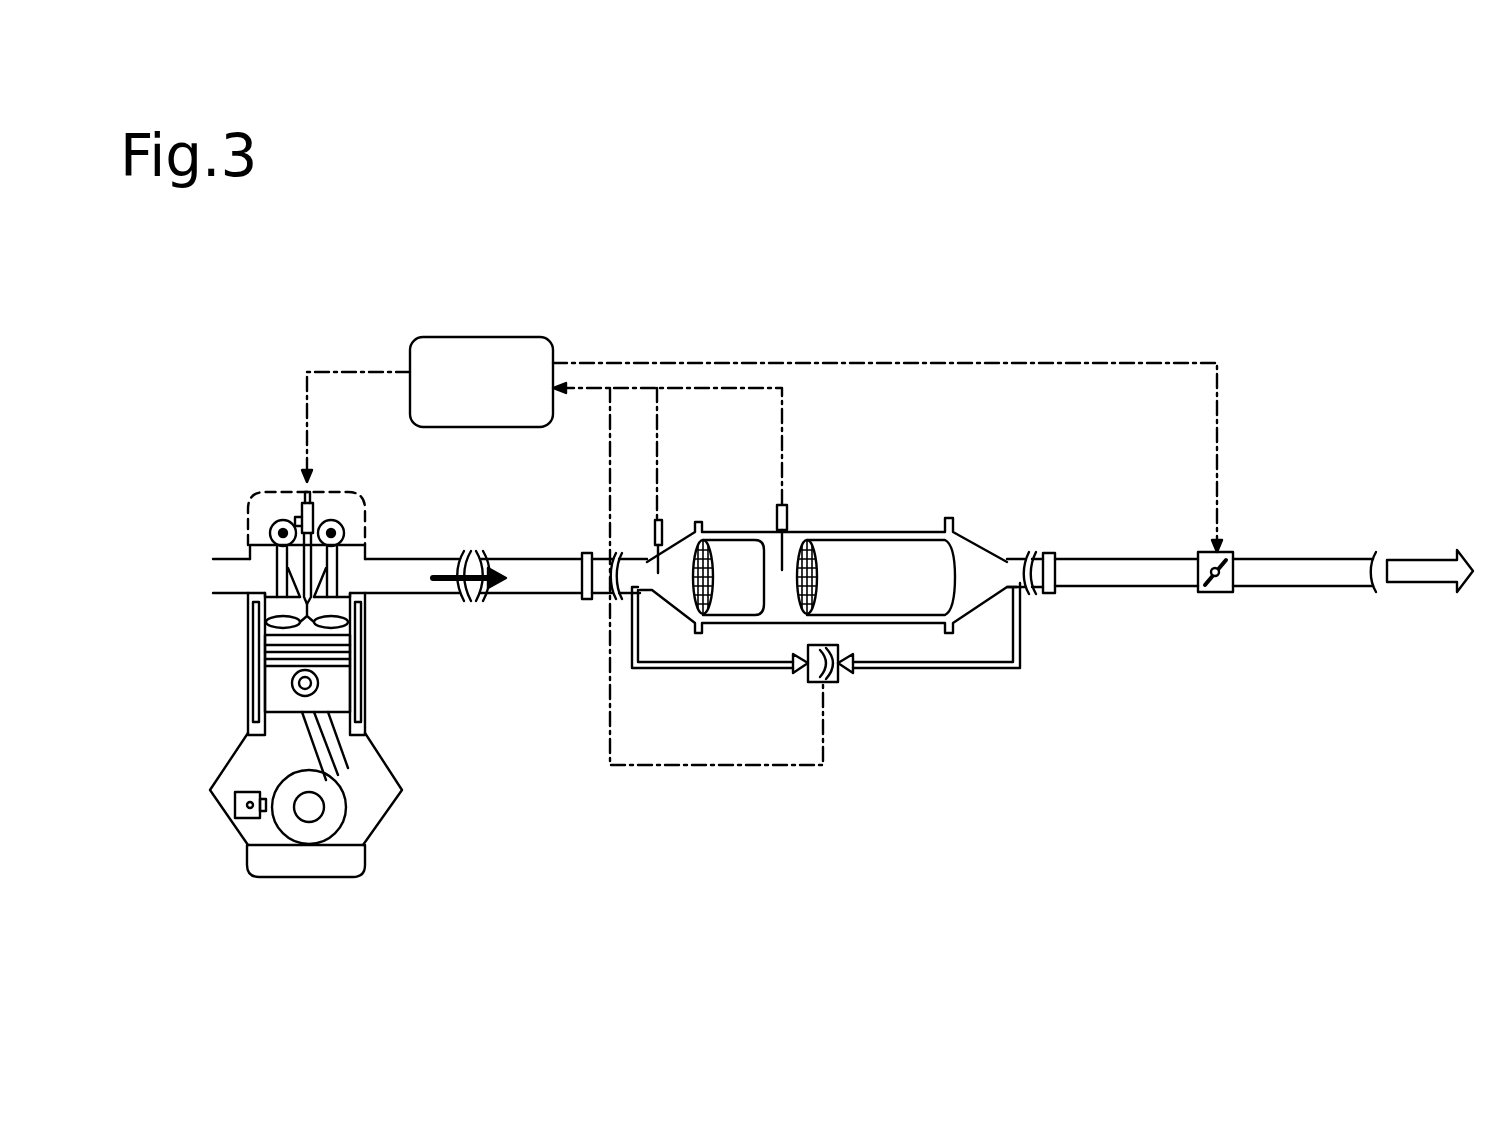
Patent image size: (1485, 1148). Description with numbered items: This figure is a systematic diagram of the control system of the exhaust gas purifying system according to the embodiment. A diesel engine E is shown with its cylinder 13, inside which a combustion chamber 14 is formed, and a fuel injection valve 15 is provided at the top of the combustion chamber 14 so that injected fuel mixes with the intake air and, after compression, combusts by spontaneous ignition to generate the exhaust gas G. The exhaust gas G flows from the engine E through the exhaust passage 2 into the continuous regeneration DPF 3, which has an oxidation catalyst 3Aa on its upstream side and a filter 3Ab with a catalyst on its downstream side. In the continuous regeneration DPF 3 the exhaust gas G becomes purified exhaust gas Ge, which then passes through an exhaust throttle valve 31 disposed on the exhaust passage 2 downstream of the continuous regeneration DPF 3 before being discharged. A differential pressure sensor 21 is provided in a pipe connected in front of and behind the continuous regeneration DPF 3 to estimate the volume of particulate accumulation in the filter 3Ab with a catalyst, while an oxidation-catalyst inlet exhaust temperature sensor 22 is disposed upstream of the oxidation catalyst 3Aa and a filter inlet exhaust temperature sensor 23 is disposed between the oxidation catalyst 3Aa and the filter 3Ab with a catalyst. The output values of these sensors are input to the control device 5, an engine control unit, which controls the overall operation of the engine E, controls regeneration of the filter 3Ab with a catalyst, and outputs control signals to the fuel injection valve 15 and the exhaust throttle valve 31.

The diesel engine E is at (243, 711).
The cylinder 13 is at (248, 660).
The combustion chamber 14 is at (275, 613).
The fuel injection valve 15 is at (300, 516).
The control device 5 is at (537, 338).
The exhaust passage 2 is at (533, 559).
The continuous regeneration DPF 3 is at (907, 527).
The oxidation catalyst 3Aa is at (748, 603).
The filter with a catalyst 3Ab is at (920, 598).
The differential pressure sensor 21 is at (836, 683).
The oxidation-catalyst inlet exhaust temperature sensor 22 is at (663, 527).
The filter inlet exhaust temperature sensor 23 is at (788, 513).
The exhaust throttle valve 31 is at (1222, 552).
The exhaust gas G is at (450, 596).
The purified exhaust gas Ge is at (1430, 589).